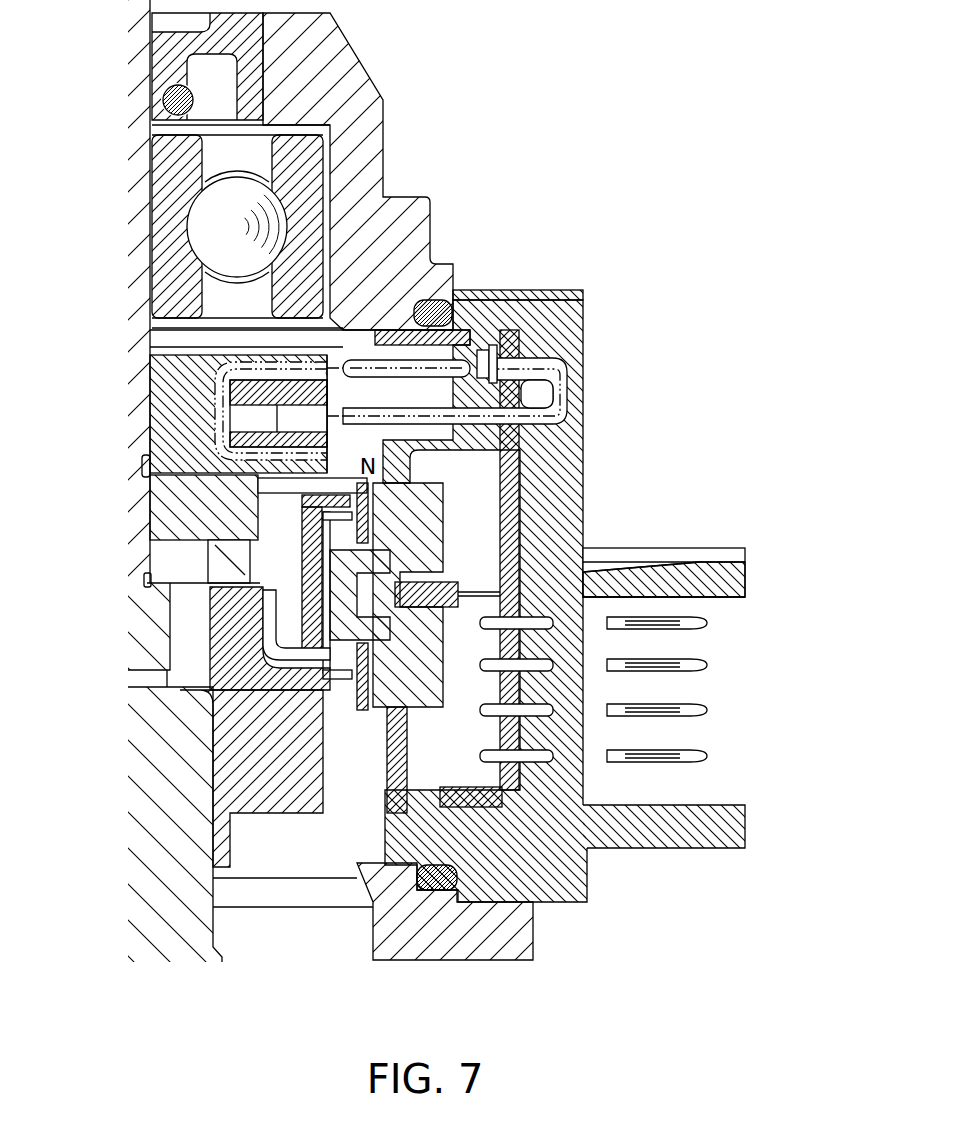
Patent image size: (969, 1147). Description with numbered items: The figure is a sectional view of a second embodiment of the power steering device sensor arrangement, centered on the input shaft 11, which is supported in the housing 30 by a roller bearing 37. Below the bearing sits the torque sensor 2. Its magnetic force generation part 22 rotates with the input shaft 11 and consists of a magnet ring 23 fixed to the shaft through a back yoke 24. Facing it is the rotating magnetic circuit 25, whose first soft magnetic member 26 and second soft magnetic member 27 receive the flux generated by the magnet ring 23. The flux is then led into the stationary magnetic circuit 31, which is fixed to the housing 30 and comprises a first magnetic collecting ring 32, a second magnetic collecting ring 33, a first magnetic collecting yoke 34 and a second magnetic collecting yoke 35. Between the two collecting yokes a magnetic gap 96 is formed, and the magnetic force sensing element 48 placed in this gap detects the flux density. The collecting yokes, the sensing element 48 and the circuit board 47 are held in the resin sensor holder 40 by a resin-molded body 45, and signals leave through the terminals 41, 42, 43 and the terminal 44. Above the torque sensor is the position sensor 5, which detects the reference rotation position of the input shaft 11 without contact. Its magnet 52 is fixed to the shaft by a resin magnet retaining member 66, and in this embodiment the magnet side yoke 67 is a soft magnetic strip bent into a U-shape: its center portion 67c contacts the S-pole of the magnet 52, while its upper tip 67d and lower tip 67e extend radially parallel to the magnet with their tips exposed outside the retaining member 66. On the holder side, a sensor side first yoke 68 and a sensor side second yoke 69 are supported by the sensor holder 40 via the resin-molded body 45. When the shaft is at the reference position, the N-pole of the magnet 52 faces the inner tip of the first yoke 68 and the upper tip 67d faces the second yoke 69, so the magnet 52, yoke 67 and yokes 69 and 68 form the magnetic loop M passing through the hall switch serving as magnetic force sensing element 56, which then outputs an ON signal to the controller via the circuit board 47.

The torque sensor 2 is at (453, 488).
The position sensor 5 is at (527, 345).
The input shaft 11 is at (140, 237).
The magnetic force generation part 22 is at (137, 531).
The magnet ring 23 is at (205, 560).
The back yoke 24 is at (172, 520).
The rotating magnetic circuit 25 is at (175, 638).
The first soft magnetic member 26 is at (300, 590).
The second soft magnetic member 27 is at (335, 660).
The housing 30 is at (387, 73).
The stationary magnetic circuit 31 is at (612, 576).
The first magnetic collecting ring 32 is at (380, 497).
The second magnetic collecting ring 33 is at (410, 678).
The first magnetic collecting yoke 34 is at (422, 533).
The second magnetic collecting yoke 35 is at (420, 630).
The roller bearing 37 is at (165, 170).
The sensor holder 40 is at (703, 846).
The terminal 41 is at (707, 753).
The terminal 42 is at (707, 707).
The terminal 43 is at (707, 662).
The terminal 44 is at (707, 620).
The resin-molded body 45 is at (444, 760).
The circuit board 47 is at (500, 730).
The magnetic force sensing element 48 is at (452, 582).
The magnet 52 is at (228, 385).
The magnetic force sensing element 56 is at (490, 340).
The magnet retaining member 66 is at (205, 413).
The magnet side yoke 67 is at (220, 390).
The center portion 67c is at (217, 432).
The upper tip 67d is at (270, 347).
The lower tip 67e is at (258, 478).
The sensor side first yoke 68 is at (560, 393).
The sensor side second yoke 69 is at (463, 360).
The magnetic gap 96 is at (437, 568).
The magnetic loop M is at (590, 372).